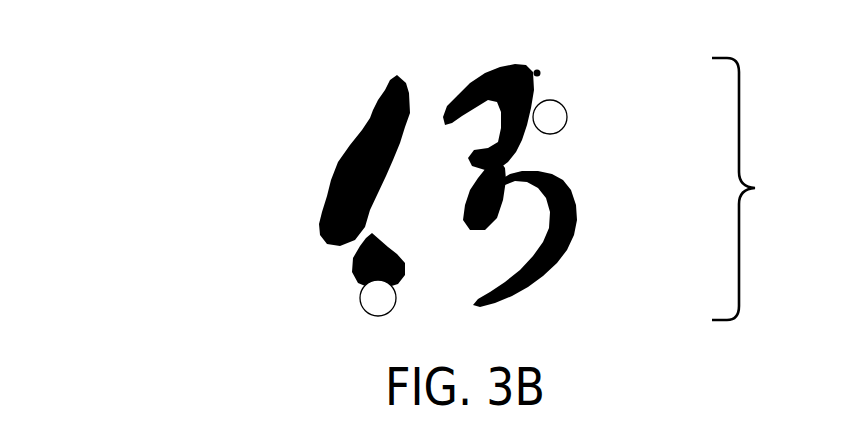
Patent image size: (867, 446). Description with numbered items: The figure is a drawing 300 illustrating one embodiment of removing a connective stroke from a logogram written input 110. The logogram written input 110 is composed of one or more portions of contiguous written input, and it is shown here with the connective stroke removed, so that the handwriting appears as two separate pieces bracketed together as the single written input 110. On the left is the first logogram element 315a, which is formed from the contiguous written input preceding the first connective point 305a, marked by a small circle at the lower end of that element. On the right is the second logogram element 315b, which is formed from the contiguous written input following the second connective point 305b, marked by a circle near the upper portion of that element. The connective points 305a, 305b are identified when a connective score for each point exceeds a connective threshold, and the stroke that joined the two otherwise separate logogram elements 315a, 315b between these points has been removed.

The handwritten input image 300 is at (91, 66).
The logogram written input 110 is at (756, 189).
The first logogram element 315a is at (356, 136).
The second logogram element 315b is at (574, 222).
The first connective point 305a is at (364, 302).
The second connective point 305b is at (566, 119).